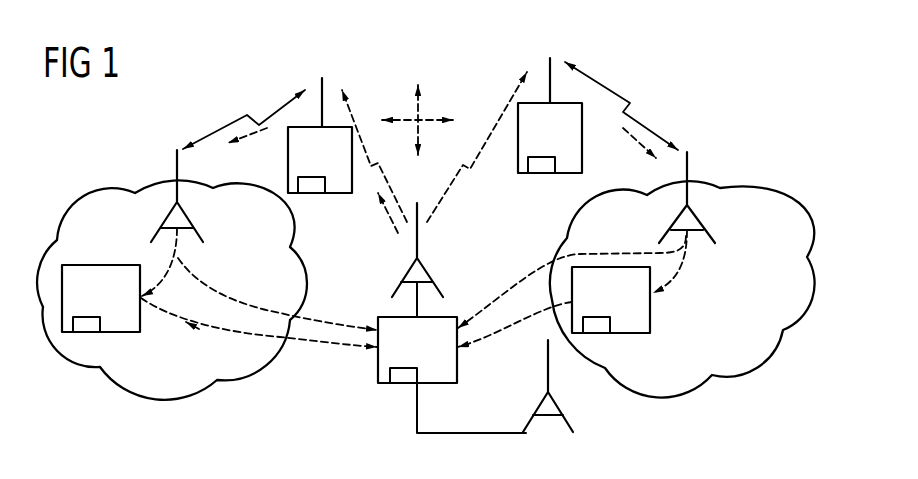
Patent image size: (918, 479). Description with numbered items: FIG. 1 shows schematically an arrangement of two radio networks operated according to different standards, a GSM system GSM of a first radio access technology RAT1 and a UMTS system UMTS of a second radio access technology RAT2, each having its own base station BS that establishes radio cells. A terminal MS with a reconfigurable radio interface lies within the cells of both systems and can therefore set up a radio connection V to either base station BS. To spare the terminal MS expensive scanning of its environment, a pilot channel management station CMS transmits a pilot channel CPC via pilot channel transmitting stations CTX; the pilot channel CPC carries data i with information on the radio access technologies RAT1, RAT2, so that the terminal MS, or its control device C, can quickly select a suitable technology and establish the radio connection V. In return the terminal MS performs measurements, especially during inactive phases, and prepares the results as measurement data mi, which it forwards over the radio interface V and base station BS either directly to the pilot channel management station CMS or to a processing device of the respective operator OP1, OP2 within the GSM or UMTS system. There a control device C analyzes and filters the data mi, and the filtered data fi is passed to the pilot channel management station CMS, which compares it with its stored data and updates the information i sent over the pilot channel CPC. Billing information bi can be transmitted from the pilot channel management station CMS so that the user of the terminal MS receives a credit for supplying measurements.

The first radio access technology RAT1 is at (117, 181).
The second radio access technology RAT2 is at (741, 165).
The GSM radio communication system GSM is at (107, 227).
The UMTS radio communication system UMTS is at (707, 338).
The base station BS is at (187, 217).
The terminal MS is at (320, 135).
The pilot channel transmitting station CTX is at (428, 268).
The pilot channel management station CMS is at (452, 357).
The operator OP1 is at (119, 280).
The operator OP2 is at (629, 281).
The control device C is at (318, 193).
The radio connection V is at (230, 132).
The measurement data mi is at (258, 133).
The billing information bi is at (217, 333).
The filtered data fi is at (327, 343).
The pilot channel information data i is at (393, 220).
The pilot channel CPC is at (363, 123).